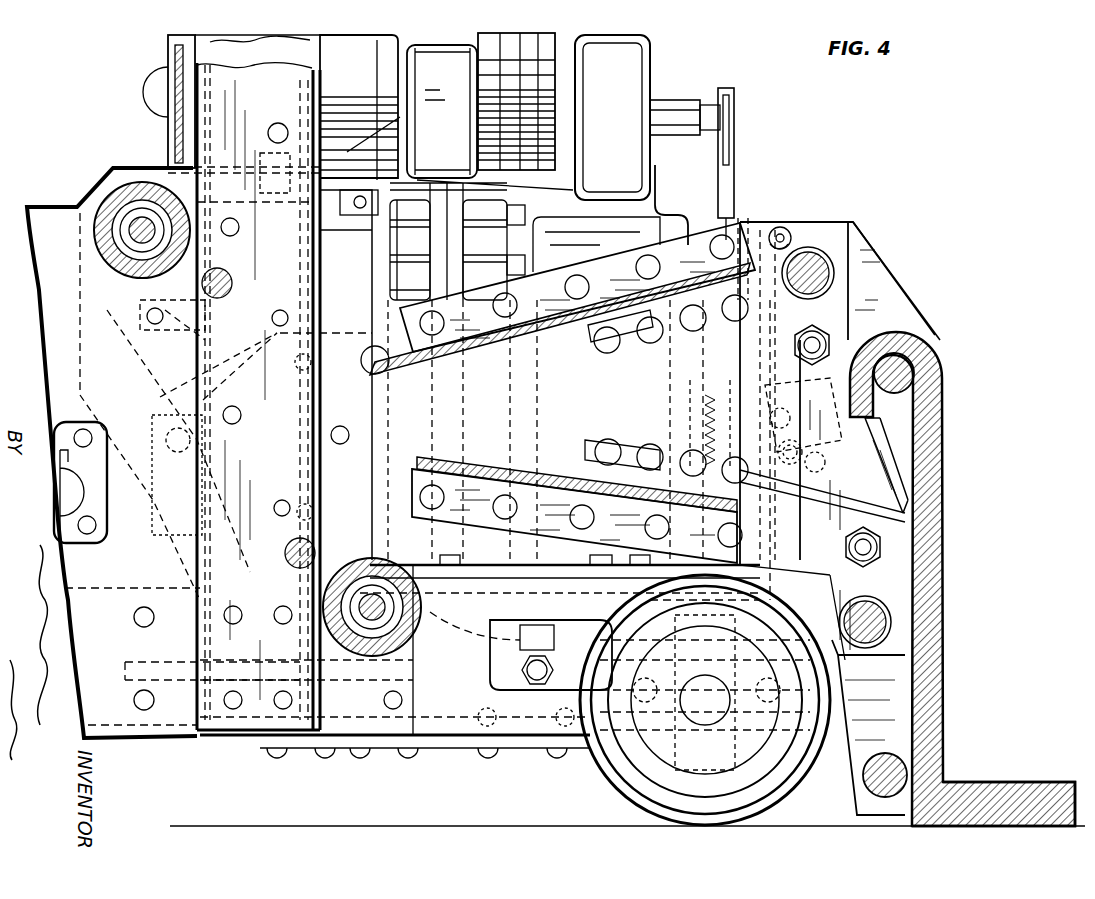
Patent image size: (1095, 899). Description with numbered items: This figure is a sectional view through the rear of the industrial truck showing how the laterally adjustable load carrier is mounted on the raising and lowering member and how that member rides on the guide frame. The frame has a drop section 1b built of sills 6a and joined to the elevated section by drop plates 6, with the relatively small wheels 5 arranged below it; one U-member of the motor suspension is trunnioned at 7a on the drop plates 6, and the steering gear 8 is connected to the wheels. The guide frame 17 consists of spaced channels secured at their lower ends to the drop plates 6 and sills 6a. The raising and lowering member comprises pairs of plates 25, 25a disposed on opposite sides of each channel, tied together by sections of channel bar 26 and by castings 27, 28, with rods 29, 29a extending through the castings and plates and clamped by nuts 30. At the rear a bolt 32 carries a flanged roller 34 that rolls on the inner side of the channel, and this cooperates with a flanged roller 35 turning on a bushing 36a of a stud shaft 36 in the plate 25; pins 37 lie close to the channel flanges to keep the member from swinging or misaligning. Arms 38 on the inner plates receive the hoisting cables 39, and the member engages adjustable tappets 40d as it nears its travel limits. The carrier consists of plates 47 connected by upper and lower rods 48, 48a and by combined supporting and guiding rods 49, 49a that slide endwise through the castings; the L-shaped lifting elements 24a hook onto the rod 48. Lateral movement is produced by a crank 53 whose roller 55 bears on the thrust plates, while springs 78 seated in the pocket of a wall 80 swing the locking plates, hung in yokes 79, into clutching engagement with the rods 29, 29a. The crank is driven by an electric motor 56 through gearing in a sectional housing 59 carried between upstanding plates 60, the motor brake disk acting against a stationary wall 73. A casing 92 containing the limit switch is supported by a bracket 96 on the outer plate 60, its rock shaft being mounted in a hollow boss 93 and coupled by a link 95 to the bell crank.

The drop section 1b is at (440, 745).
The relatively small wheels 5 is at (612, 778).
The drop plates 6 is at (48, 342).
The sills 6a is at (536, 740).
The trunnion 7a is at (100, 546).
The steering gear 8 is at (140, 662).
The guide frame 17 is at (228, 382).
The load supporting and lifting elements 24a is at (1000, 800).
The outer plates 25 is at (124, 178).
The inner plates 25a is at (346, 375).
The sections of channel bar 26 is at (562, 346).
The casting 27 is at (640, 345).
The casting 28 is at (628, 465).
The rod 29 is at (820, 343).
The rod 29a is at (878, 550).
The nuts 30 is at (872, 302).
The bolt or pin 32 is at (118, 212).
The flanged roller 34 is at (100, 258).
The flanged rollers 35 is at (410, 620).
The stud shaft 36 is at (420, 624).
The bushing 36a is at (372, 598).
The pins 37 is at (228, 278).
The arms 38 is at (160, 553).
The hoisting members 39 is at (176, 66).
The adjustable tappets 40d is at (221, 355).
The plates 47 is at (847, 756).
The upper connecting rod 48 is at (928, 344).
The lower connecting rod 48a is at (902, 768).
The upper combined supporting and guiding rod 49 is at (834, 262).
The lower combined supporting and guiding rod 49a is at (886, 632).
The arm or crank 53 is at (680, 370).
The roller 55 is at (800, 224).
The electric motor 56 is at (360, 107).
The sectional housing 59 is at (442, 111).
The up-standing plates 60 is at (390, 200).
The stationary wall 73 is at (545, 120).
The springs 78 is at (798, 440).
The yokes 79 is at (893, 458).
The wall 80 is at (806, 396).
The casing 92 is at (612, 117).
The hollow boss 93 is at (685, 107).
The link 95 is at (735, 205).
The bracket 96 is at (662, 214).